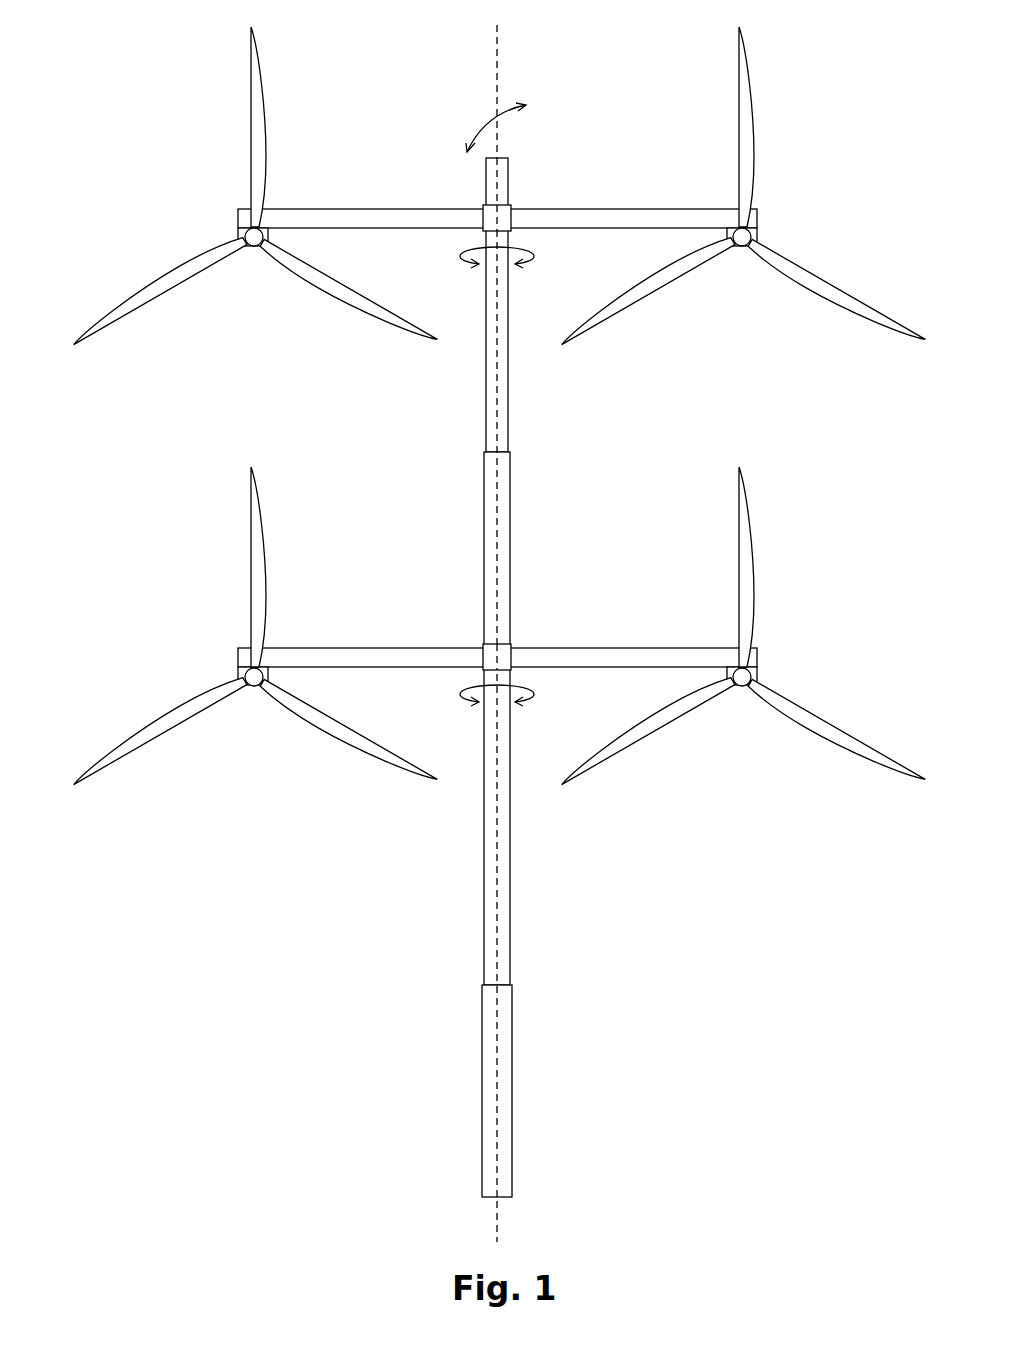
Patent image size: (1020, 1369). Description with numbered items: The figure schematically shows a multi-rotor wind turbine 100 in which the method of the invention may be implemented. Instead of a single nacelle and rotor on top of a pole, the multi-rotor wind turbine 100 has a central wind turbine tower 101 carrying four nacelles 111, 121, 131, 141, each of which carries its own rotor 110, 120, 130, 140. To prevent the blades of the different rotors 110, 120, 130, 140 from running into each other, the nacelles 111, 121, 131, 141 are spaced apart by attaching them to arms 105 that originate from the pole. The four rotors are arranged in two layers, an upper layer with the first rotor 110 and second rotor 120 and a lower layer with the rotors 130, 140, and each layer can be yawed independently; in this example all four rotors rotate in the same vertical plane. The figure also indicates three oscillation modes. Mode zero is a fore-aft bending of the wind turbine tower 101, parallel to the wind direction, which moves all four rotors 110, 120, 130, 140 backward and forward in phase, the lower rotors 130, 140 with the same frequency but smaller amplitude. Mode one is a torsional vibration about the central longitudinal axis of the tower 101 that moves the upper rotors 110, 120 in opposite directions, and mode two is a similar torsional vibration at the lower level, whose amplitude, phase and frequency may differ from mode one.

The multi-rotor wind turbine 100 is at (495, 633).
The wind turbine tower 101 is at (485, 505).
The arm 105 is at (632, 209).
The first rotor 110 is at (268, 152).
The nacelle 111 is at (253, 254).
The second rotor 120 is at (807, 267).
The nacelle 121 is at (740, 254).
The rotor 130 is at (167, 715).
The nacelle 131 is at (253, 694).
The rotor 140 is at (800, 722).
The nacelle 141 is at (740, 691).